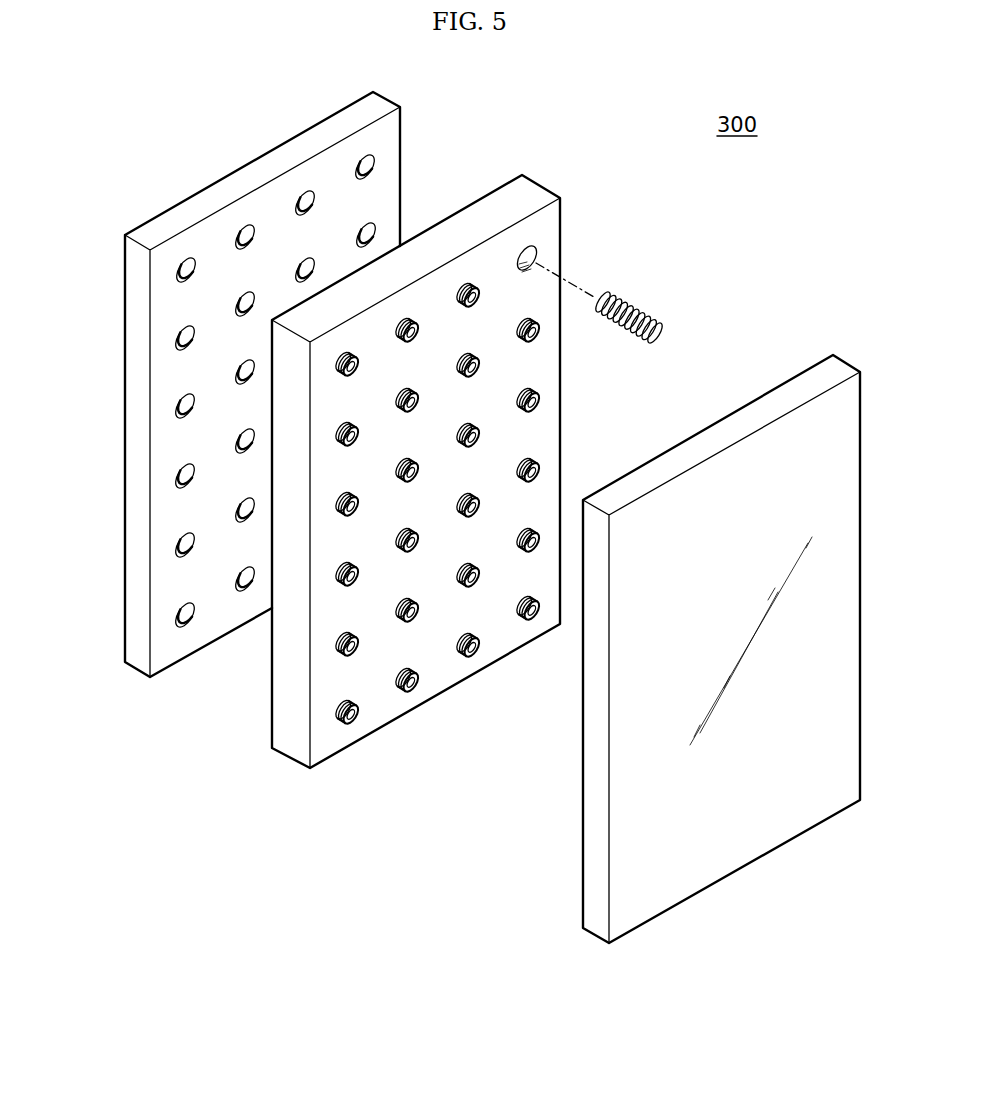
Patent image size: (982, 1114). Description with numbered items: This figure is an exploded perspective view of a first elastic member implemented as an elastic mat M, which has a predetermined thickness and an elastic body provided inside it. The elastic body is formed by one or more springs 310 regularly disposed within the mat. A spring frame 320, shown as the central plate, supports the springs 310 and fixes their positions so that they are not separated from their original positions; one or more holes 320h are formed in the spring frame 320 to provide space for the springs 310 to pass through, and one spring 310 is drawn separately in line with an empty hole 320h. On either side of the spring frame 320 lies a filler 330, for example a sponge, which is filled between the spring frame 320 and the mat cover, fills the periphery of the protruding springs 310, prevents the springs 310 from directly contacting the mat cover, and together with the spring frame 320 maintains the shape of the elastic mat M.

The spring 310 is at (640, 310).
The spring frame 320 is at (290, 745).
The hole 320h is at (342, 719).
The filler 330 is at (138, 663).
The elastic mat M is at (111, 624).